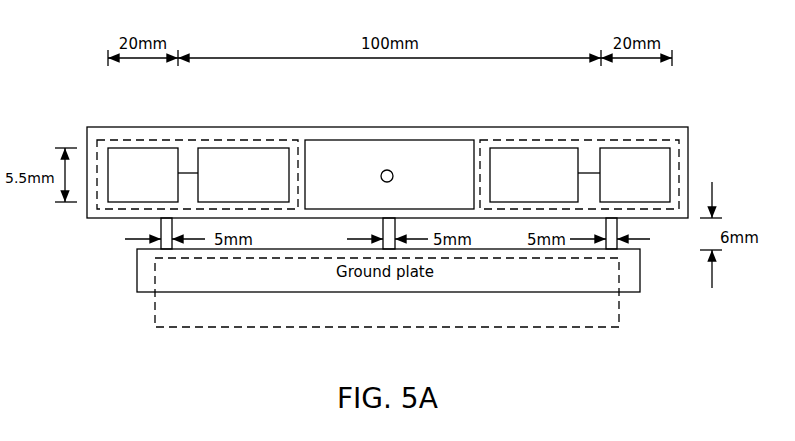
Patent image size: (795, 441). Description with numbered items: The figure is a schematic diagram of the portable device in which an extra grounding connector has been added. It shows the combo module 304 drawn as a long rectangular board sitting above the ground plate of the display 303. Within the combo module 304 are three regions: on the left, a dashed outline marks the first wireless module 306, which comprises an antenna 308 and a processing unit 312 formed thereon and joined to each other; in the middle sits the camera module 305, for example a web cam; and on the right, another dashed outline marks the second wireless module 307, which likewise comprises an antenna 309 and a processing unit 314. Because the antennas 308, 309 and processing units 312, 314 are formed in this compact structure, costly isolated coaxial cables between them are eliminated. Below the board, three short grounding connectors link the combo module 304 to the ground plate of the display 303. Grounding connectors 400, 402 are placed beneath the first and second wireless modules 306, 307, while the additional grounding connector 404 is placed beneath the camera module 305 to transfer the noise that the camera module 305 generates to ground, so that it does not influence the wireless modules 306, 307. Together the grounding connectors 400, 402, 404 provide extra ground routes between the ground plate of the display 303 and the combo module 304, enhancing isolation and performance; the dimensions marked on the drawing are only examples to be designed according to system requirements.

The display 303 is at (619, 300).
The combo module 304 is at (688, 182).
The camera module 305 is at (362, 140).
The first wireless module 306 is at (97, 140).
The second wireless module 307 is at (679, 140).
The antenna 308 is at (143, 148).
The antenna 309 is at (641, 148).
The processing unit 312 is at (250, 148).
The processing unit 314 is at (536, 148).
The grounding connector 400 is at (160, 233).
The grounding connector 402 is at (618, 230).
The grounding connector 404 is at (382, 233).